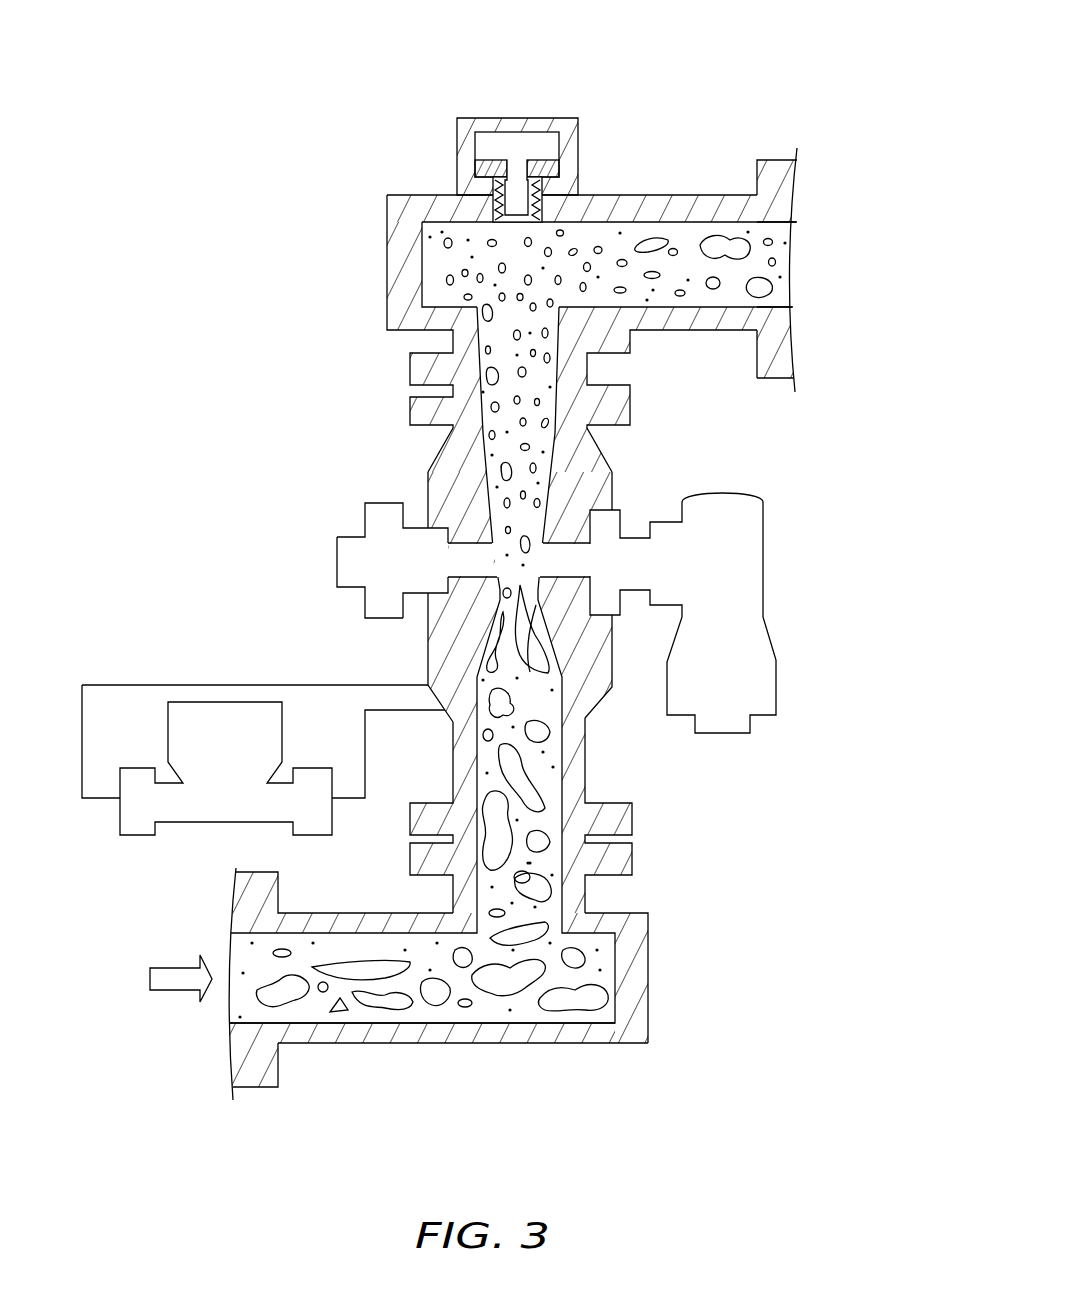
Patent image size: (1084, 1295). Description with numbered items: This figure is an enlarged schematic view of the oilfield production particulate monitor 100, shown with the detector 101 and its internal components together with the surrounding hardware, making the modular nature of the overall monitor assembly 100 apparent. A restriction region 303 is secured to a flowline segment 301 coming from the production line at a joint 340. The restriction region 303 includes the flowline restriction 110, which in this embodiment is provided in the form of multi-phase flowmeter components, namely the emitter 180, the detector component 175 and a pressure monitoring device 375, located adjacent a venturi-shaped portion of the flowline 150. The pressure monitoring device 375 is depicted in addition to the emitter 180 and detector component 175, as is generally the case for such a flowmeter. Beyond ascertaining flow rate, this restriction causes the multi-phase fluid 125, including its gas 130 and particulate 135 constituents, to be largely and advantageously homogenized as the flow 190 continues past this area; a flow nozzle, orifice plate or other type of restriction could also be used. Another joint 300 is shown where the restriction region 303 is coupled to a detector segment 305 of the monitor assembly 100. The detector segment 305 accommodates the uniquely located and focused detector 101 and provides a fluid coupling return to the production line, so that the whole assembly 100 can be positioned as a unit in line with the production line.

The oilfield production particulate monitor 100 is at (203, 88).
The detector 101 is at (526, 91).
The multi-phase fluid 125 is at (429, 270).
The gas 130 is at (655, 242).
The particulate 135 is at (680, 232).
The detector segment 305 is at (827, 239).
The joint 300 is at (643, 387).
The restriction region 303 is at (192, 547).
The flowline restriction 110 is at (312, 554).
The emitter 180 is at (362, 603).
The detector component 175 is at (752, 568).
The pressure monitoring device 375 is at (140, 838).
The joint 340 is at (643, 834).
The flowline segment 301 is at (675, 977).
The flowline 150 is at (575, 1040).
The flow 190 is at (172, 992).